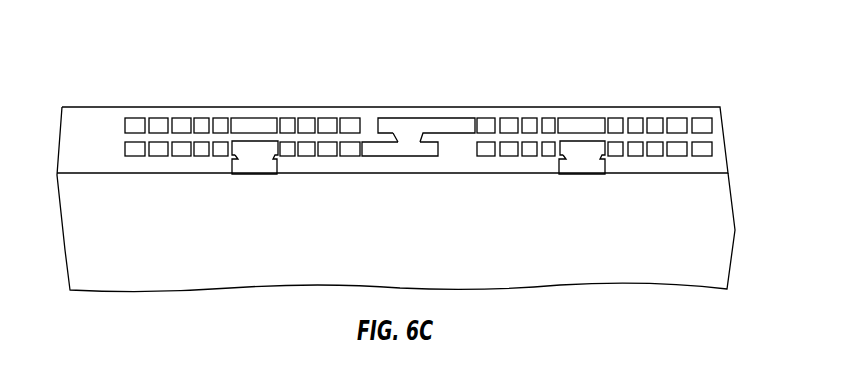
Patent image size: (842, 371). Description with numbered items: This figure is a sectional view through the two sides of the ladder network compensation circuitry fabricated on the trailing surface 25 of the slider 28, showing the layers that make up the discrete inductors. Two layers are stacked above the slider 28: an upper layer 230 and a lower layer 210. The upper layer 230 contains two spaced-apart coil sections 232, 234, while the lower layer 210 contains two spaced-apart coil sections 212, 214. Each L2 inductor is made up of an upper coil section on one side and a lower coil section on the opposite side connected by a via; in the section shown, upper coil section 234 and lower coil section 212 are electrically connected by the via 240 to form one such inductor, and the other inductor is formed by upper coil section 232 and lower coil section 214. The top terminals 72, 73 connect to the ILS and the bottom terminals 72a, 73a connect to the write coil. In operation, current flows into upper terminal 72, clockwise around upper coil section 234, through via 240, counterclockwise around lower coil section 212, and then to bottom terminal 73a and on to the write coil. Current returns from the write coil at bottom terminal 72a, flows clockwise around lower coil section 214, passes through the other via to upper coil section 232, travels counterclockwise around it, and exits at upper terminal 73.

The slider 28 is at (77, 260).
The upper layer 230 is at (104, 118).
The lower layer 210 is at (104, 142).
The upper coil section 232 is at (125, 87).
The upper coil section 234 is at (710, 87).
The top terminal 73 is at (257, 117).
The top terminal 72 is at (582, 117).
The via 240 is at (416, 117).
The trailing surface 25 is at (420, 175).
The lower coil section 212 is at (125, 197).
The lower coil section 214 is at (478, 197).
The bottom terminal 73a is at (247, 170).
The bottom terminal 72a is at (587, 170).